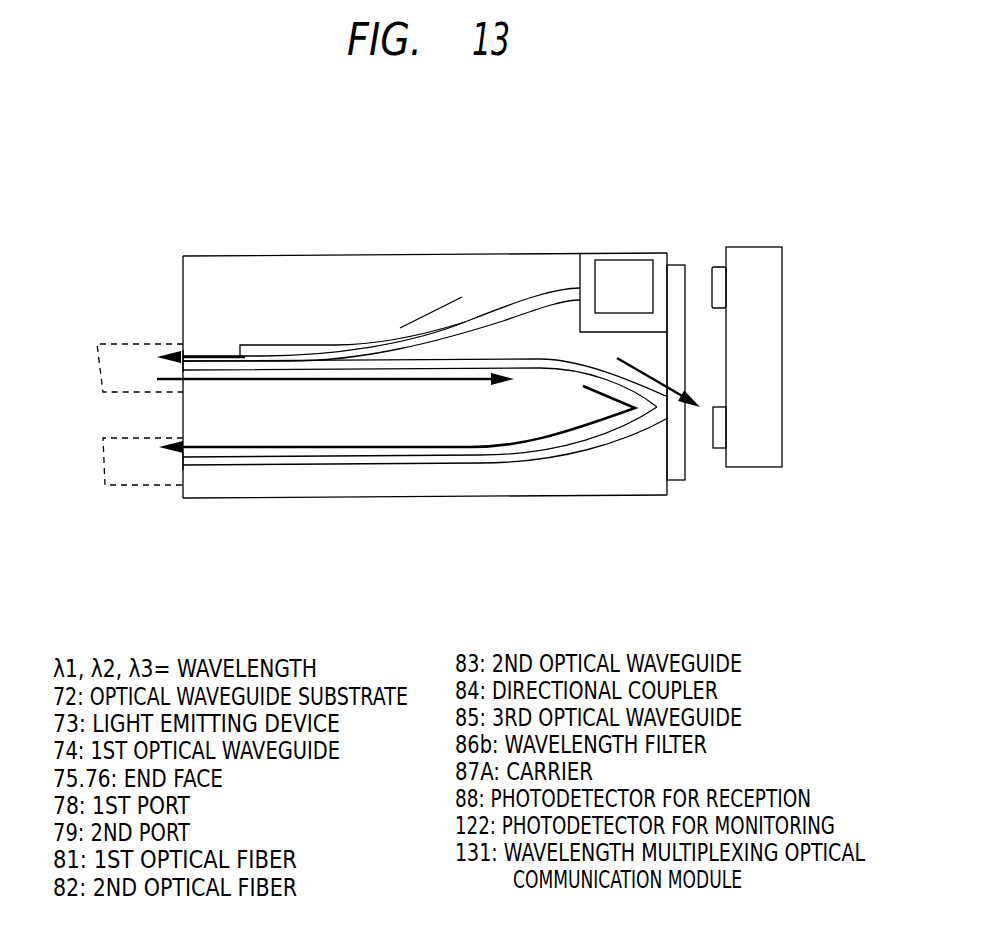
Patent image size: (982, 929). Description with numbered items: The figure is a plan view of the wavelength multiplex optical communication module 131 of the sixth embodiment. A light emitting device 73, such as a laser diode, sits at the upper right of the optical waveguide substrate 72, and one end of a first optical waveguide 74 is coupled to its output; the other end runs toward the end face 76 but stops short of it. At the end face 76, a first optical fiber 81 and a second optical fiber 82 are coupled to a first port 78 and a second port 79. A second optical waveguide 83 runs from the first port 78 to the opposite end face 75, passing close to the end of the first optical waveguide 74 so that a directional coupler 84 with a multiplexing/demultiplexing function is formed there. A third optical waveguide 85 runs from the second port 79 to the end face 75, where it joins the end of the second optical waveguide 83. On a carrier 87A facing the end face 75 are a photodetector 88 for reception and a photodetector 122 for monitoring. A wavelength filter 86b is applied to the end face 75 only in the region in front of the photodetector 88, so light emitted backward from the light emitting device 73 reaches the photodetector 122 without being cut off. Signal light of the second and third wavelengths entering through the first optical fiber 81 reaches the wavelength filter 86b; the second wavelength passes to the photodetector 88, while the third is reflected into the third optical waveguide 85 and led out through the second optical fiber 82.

The optical waveguide substrate 72 is at (303, 268).
The light emitting device 73 is at (603, 265).
The first optical waveguide 74 is at (477, 300).
The end face 75 is at (684, 318).
The end face 76 is at (183, 287).
The first port 78 is at (183, 347).
The second port 79 is at (183, 466).
The first optical fiber 81 is at (142, 343).
The second optical fiber 82 is at (122, 437).
The second optical waveguide 83 is at (547, 357).
The directional coupler 84 is at (285, 344).
The third optical waveguide 85 is at (437, 465).
The wavelength filter 86b is at (681, 481).
The carrier 87A is at (752, 247).
The photodetector for reception 88 is at (720, 425).
The photodetector for monitoring 122 is at (712, 271).
The wavelength multiplex optical communication module 131 is at (737, 199).